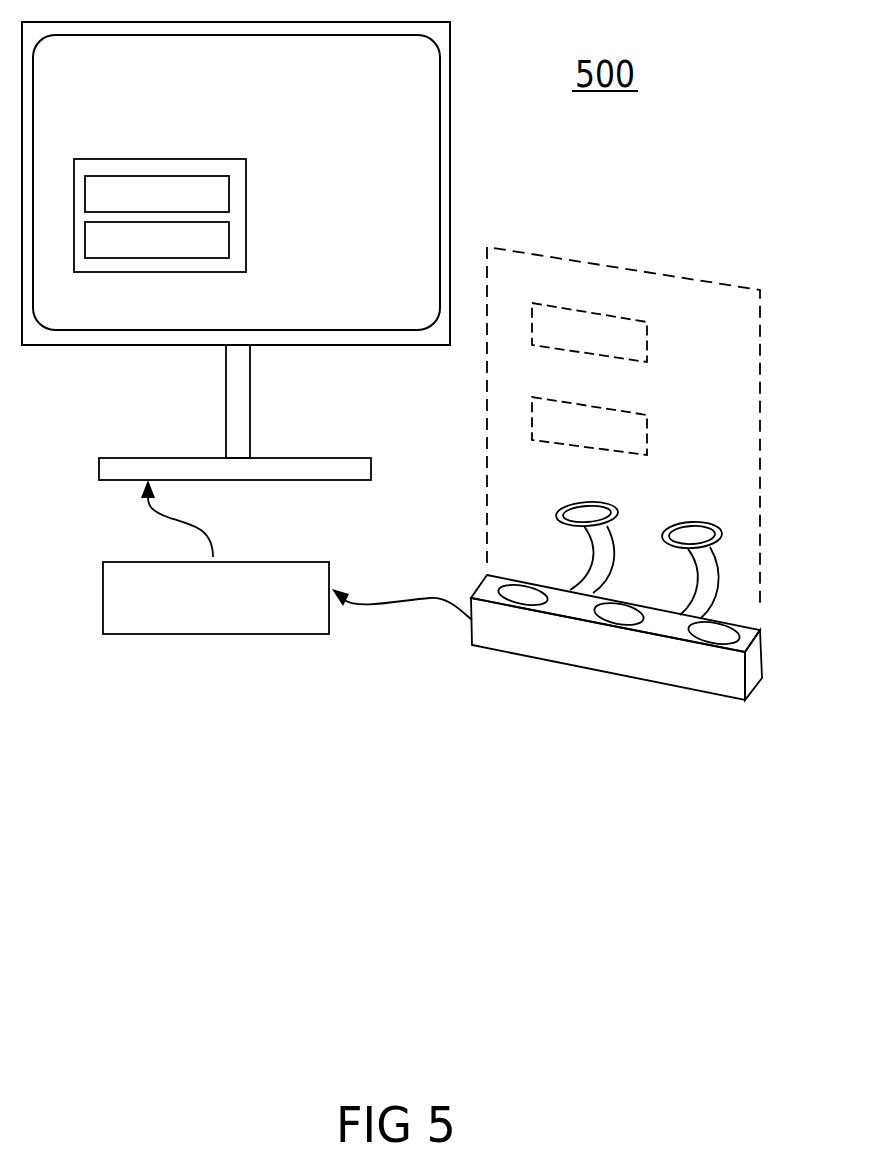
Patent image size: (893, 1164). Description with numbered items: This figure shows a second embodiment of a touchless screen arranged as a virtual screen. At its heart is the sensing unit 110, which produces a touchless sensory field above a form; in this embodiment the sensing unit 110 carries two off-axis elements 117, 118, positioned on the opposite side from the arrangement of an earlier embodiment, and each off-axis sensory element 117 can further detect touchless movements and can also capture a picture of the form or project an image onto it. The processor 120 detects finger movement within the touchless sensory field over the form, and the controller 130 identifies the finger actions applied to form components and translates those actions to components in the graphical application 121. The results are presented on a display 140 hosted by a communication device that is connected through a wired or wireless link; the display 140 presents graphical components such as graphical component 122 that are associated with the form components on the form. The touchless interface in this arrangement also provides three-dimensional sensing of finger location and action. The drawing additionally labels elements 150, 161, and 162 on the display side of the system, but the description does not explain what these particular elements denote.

The sensing unit 110 is at (717, 678).
The off-axis sensory element 117 is at (587, 503).
The off-axis element 118 is at (670, 523).
The processor 120 is at (663, 275).
The graphical application 121 is at (647, 341).
The graphical component 122 is at (647, 441).
The controller 130 is at (102, 595).
The display 140 is at (307, 345).
The GUI (graphical user interface) 150 is at (190, 162).
The GUI component 1 161 is at (230, 193).
The GUI component 2 162 is at (230, 249).